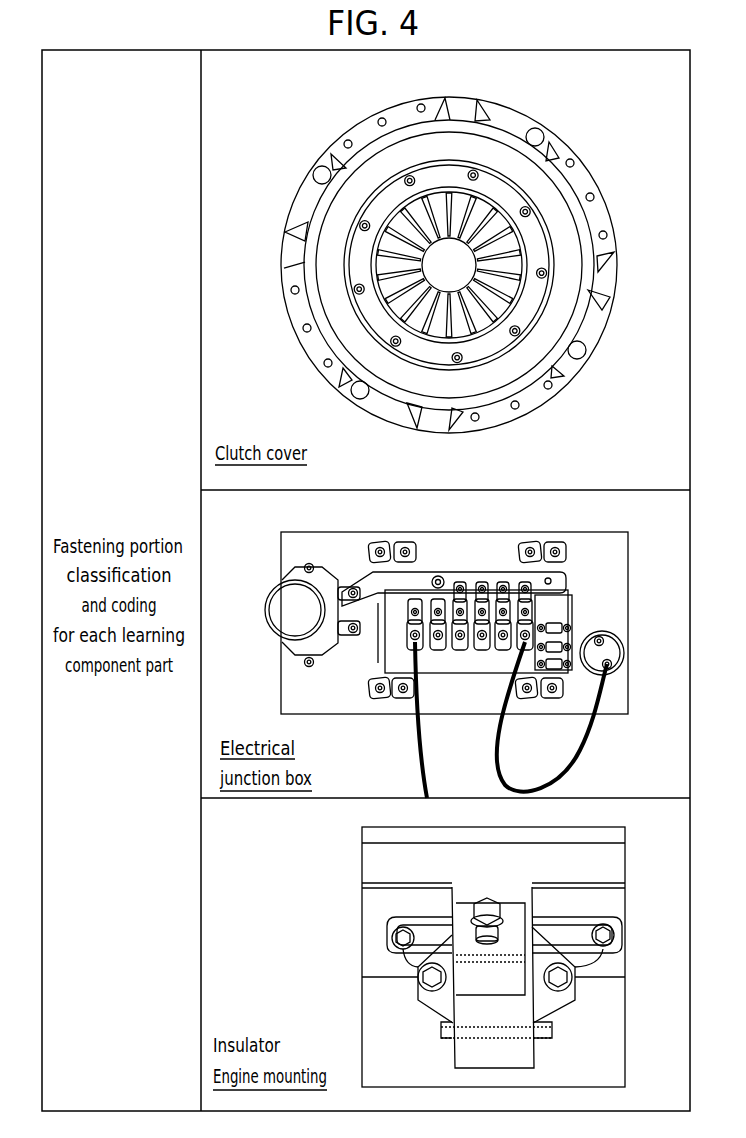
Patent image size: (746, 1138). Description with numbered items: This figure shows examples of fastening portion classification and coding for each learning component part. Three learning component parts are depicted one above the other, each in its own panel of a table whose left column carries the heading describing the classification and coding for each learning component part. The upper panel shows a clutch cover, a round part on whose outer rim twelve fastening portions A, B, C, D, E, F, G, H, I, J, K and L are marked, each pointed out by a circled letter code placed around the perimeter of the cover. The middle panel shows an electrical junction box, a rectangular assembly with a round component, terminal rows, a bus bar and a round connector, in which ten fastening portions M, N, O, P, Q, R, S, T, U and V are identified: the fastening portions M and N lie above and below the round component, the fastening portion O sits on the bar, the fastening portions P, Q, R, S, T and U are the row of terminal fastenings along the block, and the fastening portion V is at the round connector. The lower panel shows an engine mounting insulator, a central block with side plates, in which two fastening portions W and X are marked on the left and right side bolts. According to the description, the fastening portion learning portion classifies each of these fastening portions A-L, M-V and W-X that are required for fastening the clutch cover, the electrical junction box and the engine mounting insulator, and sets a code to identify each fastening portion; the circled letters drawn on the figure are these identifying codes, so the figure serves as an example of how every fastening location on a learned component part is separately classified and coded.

The fastening portion A is at (345, 141).
The fastening portion B is at (380, 119).
The fastening portion C is at (419, 104).
The fastening portion D is at (573, 160).
The fastening portion E is at (594, 195).
The fastening portion F is at (607, 234).
The fastening portion G is at (550, 388).
The fastening portion H is at (517, 409).
The fastening portion I is at (476, 421).
The fastening portion J is at (325, 365).
The fastening portion K is at (304, 330).
The fastening portion L is at (291, 291).
The fastening portion M is at (309, 563).
The fastening portion N is at (309, 667).
The fastening portion O is at (439, 576).
The fastening portion P is at (412, 640).
The fastening portion Q is at (437, 640).
The fastening portion R is at (460, 640).
The fastening portion S is at (482, 640).
The fastening portion T is at (503, 640).
The fastening portion U is at (529, 631).
The fastening portion V is at (602, 668).
The fastening portion W is at (424, 988).
The fastening portion X is at (564, 989).